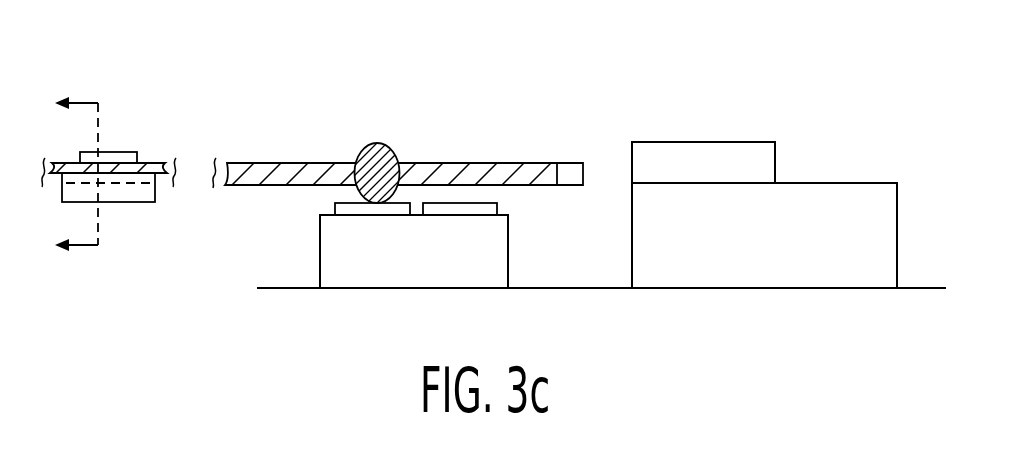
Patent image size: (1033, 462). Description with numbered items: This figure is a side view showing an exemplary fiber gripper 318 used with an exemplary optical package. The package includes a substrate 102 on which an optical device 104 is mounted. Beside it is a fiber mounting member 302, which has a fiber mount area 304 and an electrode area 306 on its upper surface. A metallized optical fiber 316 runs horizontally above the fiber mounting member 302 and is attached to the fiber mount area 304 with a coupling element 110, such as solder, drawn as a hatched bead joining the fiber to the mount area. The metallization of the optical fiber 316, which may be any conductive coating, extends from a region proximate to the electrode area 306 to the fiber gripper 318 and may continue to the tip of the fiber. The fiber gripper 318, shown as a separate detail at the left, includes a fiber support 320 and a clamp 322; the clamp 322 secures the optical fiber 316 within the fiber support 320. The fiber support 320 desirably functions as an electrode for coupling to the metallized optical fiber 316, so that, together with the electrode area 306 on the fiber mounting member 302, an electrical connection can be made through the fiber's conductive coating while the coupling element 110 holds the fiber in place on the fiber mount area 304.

The substrate 102 is at (853, 190).
The optical device 104 is at (688, 142).
The coupling element 110 is at (368, 146).
The fiber mounting member 302 is at (320, 267).
The fiber mount area 304 is at (333, 206).
The electrode area 306 is at (500, 205).
The metallized optical fiber 316 is at (158, 168).
The fiber gripper 318 is at (164, 43).
The fiber support 320 is at (143, 203).
The clamp 322 is at (113, 150).